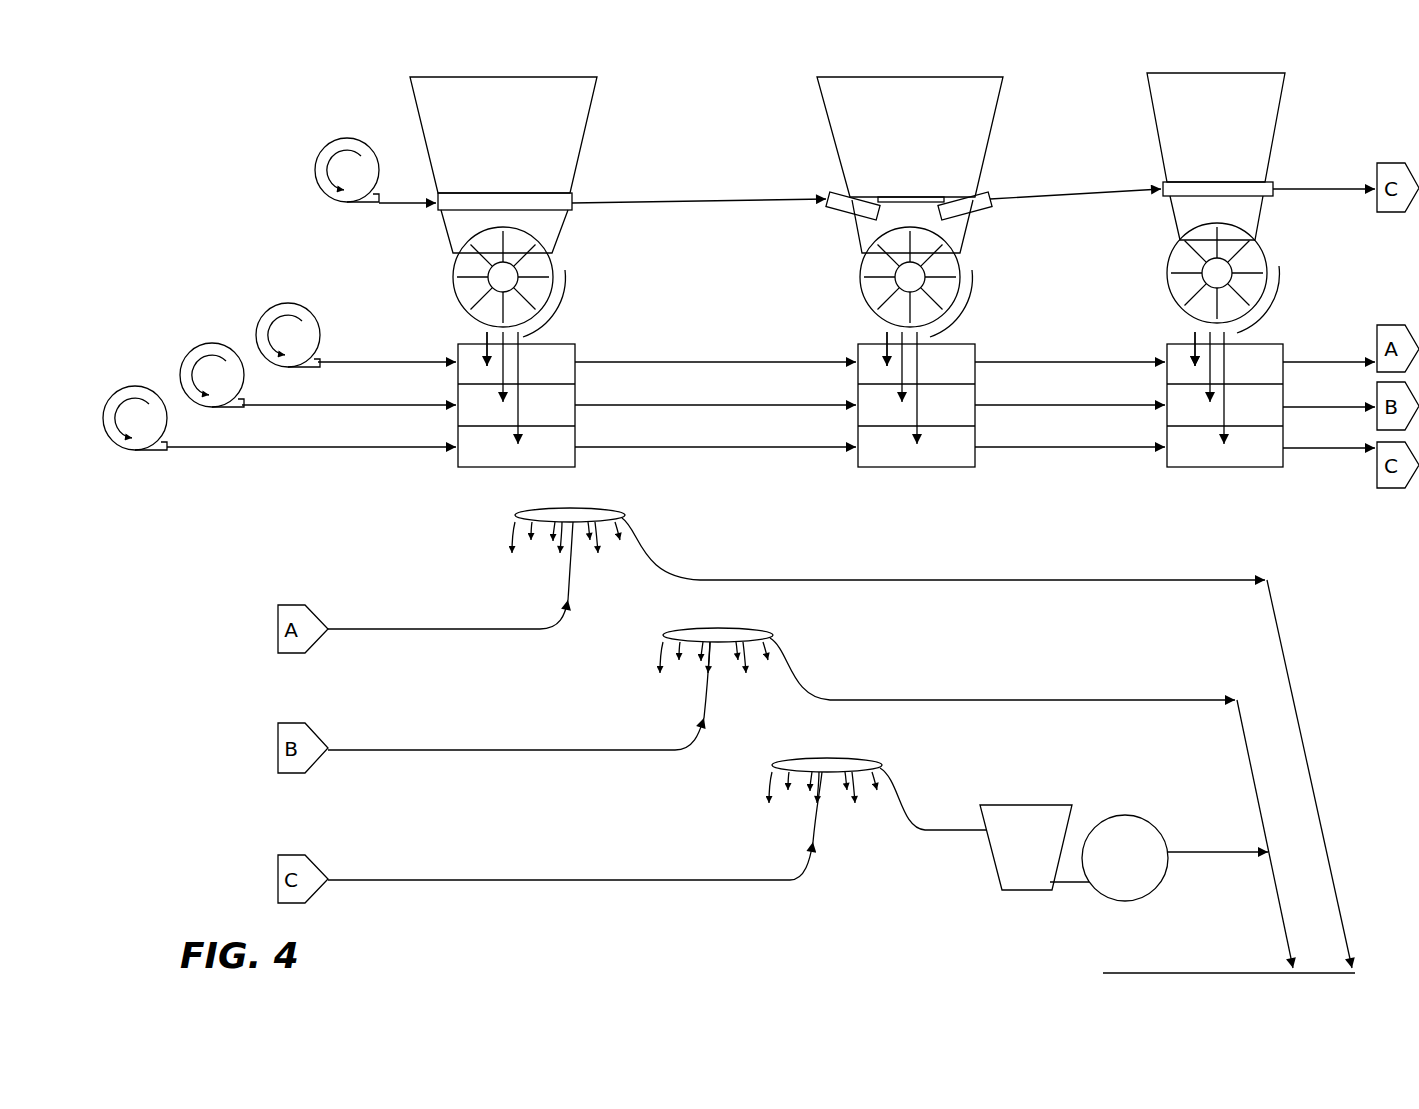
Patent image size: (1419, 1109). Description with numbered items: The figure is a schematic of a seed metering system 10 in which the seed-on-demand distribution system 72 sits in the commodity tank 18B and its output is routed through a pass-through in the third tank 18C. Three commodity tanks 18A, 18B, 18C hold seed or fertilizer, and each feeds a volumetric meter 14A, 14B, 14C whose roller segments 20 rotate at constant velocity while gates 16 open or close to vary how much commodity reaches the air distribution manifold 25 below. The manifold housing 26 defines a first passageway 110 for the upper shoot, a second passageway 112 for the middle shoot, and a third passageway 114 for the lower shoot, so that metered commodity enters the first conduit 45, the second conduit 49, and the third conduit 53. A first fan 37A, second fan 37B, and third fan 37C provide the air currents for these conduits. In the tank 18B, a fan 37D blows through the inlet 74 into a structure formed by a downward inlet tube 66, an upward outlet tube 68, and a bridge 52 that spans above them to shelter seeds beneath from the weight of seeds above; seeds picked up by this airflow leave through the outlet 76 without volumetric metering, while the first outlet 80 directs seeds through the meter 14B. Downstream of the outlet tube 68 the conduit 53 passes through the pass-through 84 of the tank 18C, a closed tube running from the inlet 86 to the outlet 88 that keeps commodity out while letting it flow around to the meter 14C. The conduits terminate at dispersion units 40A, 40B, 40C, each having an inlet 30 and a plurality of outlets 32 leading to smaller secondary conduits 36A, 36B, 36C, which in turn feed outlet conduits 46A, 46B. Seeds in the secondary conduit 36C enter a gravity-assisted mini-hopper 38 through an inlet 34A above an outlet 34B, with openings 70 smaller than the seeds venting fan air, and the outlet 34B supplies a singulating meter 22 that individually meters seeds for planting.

The seed metering system 10 is at (232, 163).
The first fan 37A is at (265, 318).
The second fan 37B is at (188, 357).
The third fan 37C is at (111, 400).
The fan 37D is at (316, 172).
The first commodity tank 18A is at (424, 136).
The second commodity tank 18B is at (829, 120).
The third commodity tank 18C is at (1153, 105).
The pass-through 84 is at (490, 193).
The inlet 86 is at (1166, 182).
The outlet 88 is at (1266, 180).
The third conduit 53 is at (625, 203).
The seed-on-demand distribution system 72 is at (788, 185).
The inlet 74 is at (848, 192).
The outlet 76 is at (975, 192).
The bridge 52 is at (905, 197).
The inlet tube 66 is at (845, 215).
The outlet tube 68 is at (975, 218).
The first outlet 80 is at (865, 240).
The first volumetric meter 14A is at (448, 283).
The second volumetric meter 14B is at (843, 292).
The third volumetric meter 14C is at (1158, 272).
The roller segment 20 is at (472, 277).
The gate 16 is at (557, 312).
The air distribution manifold 25 is at (448, 484).
The manifold housing 26 is at (578, 462).
The first passageway 110 is at (564, 379).
The second passageway 112 is at (564, 421).
The third passageway 114 is at (564, 462).
The first conduit 45 is at (395, 627).
The second conduit 49 is at (600, 752).
The inlet 30 is at (540, 632).
The outlets 32 is at (642, 518).
The secondary conduit 36A is at (514, 545).
The secondary conduit 36B is at (660, 661).
The secondary conduit 36C is at (768, 790).
The first dispersion unit 40A is at (513, 579).
The second dispersion unit 40B is at (653, 698).
The third dispersion unit 40C is at (760, 826).
The mini-hopper 38 is at (1000, 803).
The inlet 34A is at (987, 862).
The outlet 34B is at (1058, 891).
The openings 70 is at (1080, 822).
The singulating meter 22 is at (1157, 894).
The outlet conduit 46A is at (1290, 706).
The outlet conduit 46B is at (1262, 786).